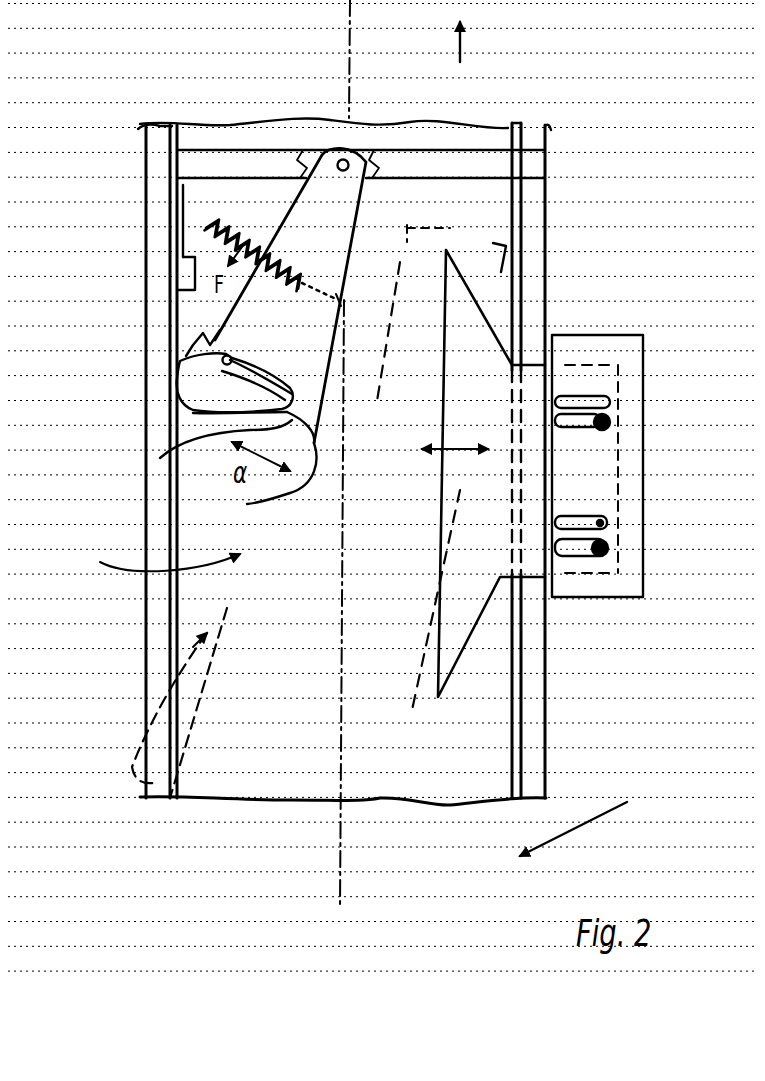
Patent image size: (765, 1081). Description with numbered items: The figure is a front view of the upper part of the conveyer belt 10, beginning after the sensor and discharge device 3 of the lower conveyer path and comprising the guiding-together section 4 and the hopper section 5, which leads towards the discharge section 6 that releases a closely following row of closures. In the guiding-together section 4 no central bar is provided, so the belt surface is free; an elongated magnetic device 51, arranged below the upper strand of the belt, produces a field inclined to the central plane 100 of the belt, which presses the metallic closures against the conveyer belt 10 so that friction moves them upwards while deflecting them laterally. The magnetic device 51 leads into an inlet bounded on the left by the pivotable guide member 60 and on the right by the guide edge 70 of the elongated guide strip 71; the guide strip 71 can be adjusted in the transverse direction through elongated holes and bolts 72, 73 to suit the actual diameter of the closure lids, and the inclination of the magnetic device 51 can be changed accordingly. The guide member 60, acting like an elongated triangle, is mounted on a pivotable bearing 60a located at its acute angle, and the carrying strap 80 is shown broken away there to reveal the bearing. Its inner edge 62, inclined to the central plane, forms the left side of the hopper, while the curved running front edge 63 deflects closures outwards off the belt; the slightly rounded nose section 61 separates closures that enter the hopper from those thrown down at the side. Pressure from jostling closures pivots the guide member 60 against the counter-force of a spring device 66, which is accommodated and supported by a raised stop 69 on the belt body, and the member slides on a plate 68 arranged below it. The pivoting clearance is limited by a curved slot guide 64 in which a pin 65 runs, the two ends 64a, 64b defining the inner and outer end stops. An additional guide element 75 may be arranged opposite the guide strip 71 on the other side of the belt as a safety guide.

The conveyer belt 10 is at (217, 763).
The central plane 100 is at (341, 853).
The carrying strap 80 is at (508, 150).
The magnetic device 51 is at (433, 231).
The guide member 60 is at (367, 222).
The pivotable bearing 60a is at (370, 150).
The inner edge 62 is at (338, 322).
The plate 68 is at (247, 214).
The raised stop 69 is at (211, 216).
The spring device 66 is at (212, 238).
The guide 64 is at (258, 378).
The end of the curved slot 64a is at (285, 413).
The end of the curved slot 64b is at (222, 357).
The pin 65 is at (250, 398).
The deflecting edge 63 is at (227, 442).
The nose section 61 is at (262, 470).
The guide edge 70 is at (447, 512).
The guide strip 71 is at (488, 585).
The elongated hole and bolt 72 is at (600, 428).
The elongated hole and bolt 73 is at (608, 528).
The additional guide element 75 is at (186, 666).
The sensor and discharge device 3 is at (614, 866).
The guiding-together section 4 is at (86, 570).
The hopper section 5 is at (424, 272).
The discharge section 6 is at (513, 35).